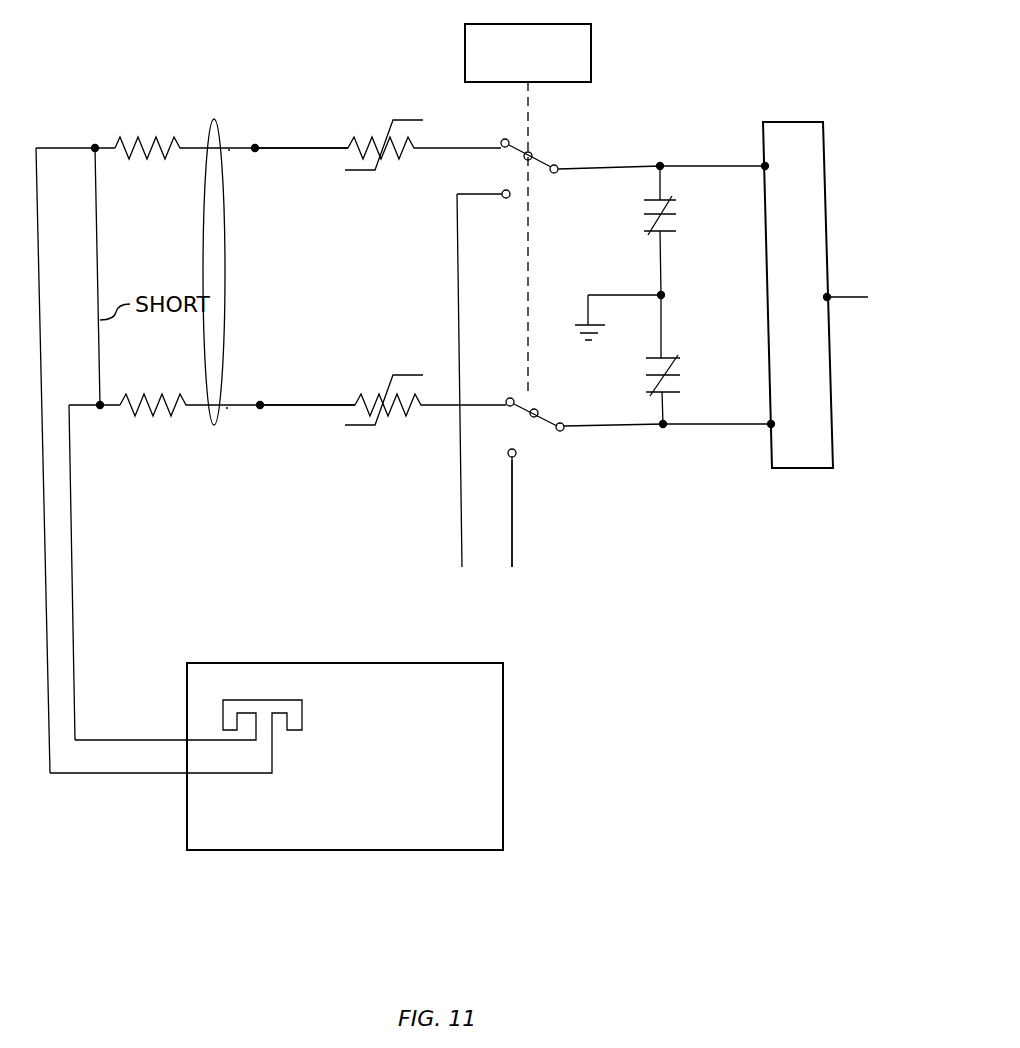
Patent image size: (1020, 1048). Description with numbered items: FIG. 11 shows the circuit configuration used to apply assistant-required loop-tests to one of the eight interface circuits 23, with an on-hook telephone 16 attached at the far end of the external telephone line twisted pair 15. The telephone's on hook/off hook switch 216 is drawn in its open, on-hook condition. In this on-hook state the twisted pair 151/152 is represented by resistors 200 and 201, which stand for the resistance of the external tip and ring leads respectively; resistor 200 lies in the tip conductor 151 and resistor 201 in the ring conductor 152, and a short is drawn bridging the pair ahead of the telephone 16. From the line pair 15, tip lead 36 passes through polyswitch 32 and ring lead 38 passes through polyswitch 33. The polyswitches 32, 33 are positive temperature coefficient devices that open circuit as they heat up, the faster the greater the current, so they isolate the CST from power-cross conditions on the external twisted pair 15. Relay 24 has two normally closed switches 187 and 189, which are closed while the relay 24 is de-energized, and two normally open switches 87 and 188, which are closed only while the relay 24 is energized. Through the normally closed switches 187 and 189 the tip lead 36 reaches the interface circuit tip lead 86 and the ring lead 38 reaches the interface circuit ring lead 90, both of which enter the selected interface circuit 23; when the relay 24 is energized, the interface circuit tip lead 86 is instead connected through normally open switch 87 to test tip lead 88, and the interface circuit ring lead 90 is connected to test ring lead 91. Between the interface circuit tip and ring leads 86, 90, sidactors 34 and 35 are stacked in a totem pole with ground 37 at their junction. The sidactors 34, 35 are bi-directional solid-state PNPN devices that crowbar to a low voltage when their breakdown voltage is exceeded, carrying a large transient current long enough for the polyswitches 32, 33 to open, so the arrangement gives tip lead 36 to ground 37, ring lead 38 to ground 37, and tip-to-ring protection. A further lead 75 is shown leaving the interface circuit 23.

The telephone line ring/tip twisted pair 15 is at (210, 118).
The on-hook telephone 16 is at (503, 756).
The interface circuit 23 is at (790, 122).
The relay 24 is at (465, 66).
The polyswitch 32 is at (390, 172).
The polyswitch 33 is at (410, 425).
The sidactor 34 is at (672, 206).
The sidactor 35 is at (678, 380).
The tip lead 36 is at (316, 148).
The ground 37 is at (665, 294).
The ring lead 38 is at (332, 405).
The block 23 output terminal 75 is at (844, 297).
The interface circuit tip lead 86 is at (730, 166).
The normally open switch 87 is at (516, 186).
The test tip lead 88 is at (458, 262).
The interface circuit ring lead 90 is at (758, 426).
The test ring lead 91 is at (514, 500).
The twisted pair tip conductor 151 is at (226, 152).
The twisted pair ring conductor 152 is at (226, 408).
The normally closed switch 187 is at (533, 151).
The normally open switch 188 is at (526, 430).
The normally closed switch 189 is at (538, 410).
The resistor 200 is at (130, 148).
The resistor 201 is at (138, 416).
The on hook/off hook switch 216 is at (288, 750).